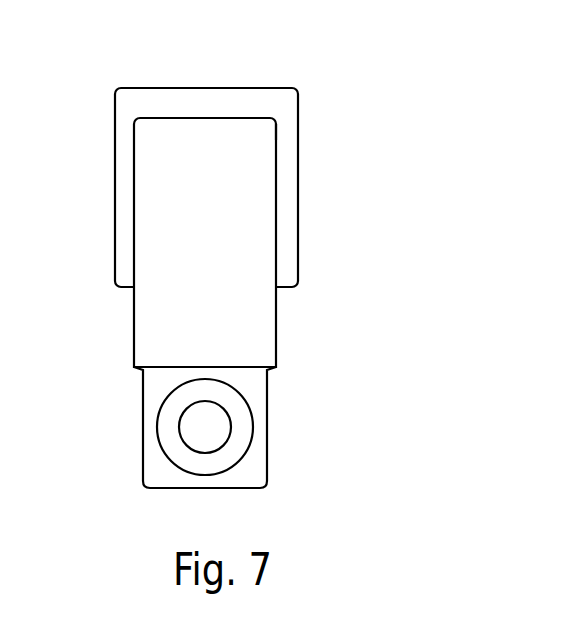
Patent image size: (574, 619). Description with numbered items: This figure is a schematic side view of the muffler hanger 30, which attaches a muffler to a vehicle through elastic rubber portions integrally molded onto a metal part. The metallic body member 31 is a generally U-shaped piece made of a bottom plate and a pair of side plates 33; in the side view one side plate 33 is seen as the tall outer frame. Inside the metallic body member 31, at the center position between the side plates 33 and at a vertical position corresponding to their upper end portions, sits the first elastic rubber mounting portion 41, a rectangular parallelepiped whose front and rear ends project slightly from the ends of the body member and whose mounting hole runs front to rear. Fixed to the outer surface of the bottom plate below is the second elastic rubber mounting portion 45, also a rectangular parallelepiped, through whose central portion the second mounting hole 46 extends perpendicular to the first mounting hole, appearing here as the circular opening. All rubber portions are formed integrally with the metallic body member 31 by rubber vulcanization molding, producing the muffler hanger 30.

The muffler hanger 30 is at (300, 50).
The metallic body member 31 is at (278, 119).
The side plate 33 is at (262, 321).
The first elastic rubber mounting portion 41 is at (217, 87).
The second elastic rubber mounting portion 45 is at (267, 442).
The second mounting hole 46 is at (205, 446).